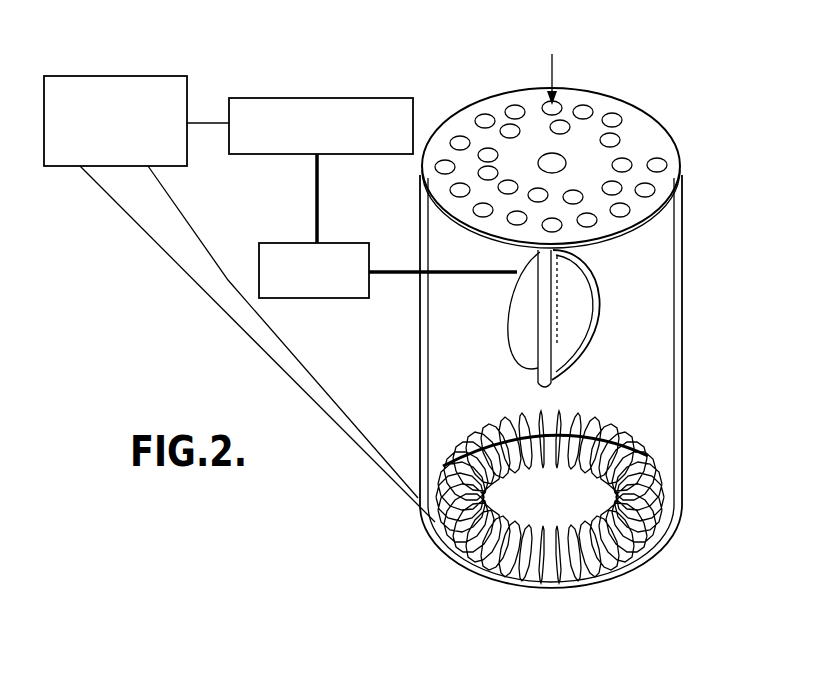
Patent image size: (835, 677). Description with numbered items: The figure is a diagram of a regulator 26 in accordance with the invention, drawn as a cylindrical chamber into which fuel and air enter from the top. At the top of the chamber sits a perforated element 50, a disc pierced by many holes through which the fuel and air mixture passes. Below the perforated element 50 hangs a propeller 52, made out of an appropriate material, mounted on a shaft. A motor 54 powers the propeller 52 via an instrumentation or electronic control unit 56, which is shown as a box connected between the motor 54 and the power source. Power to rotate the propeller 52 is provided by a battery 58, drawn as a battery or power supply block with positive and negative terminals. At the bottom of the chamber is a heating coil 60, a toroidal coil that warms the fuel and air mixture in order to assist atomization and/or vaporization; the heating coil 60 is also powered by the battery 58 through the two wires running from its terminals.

The combustion chamber assembly 26 is at (800, 0).
The perforated element 50 is at (630, 150).
The propeller 52 is at (568, 330).
The motor 54 is at (297, 243).
The instrumentation or electronic control unit 56 is at (288, 98).
The battery 58 is at (103, 76).
The heating coil 60 is at (653, 465).